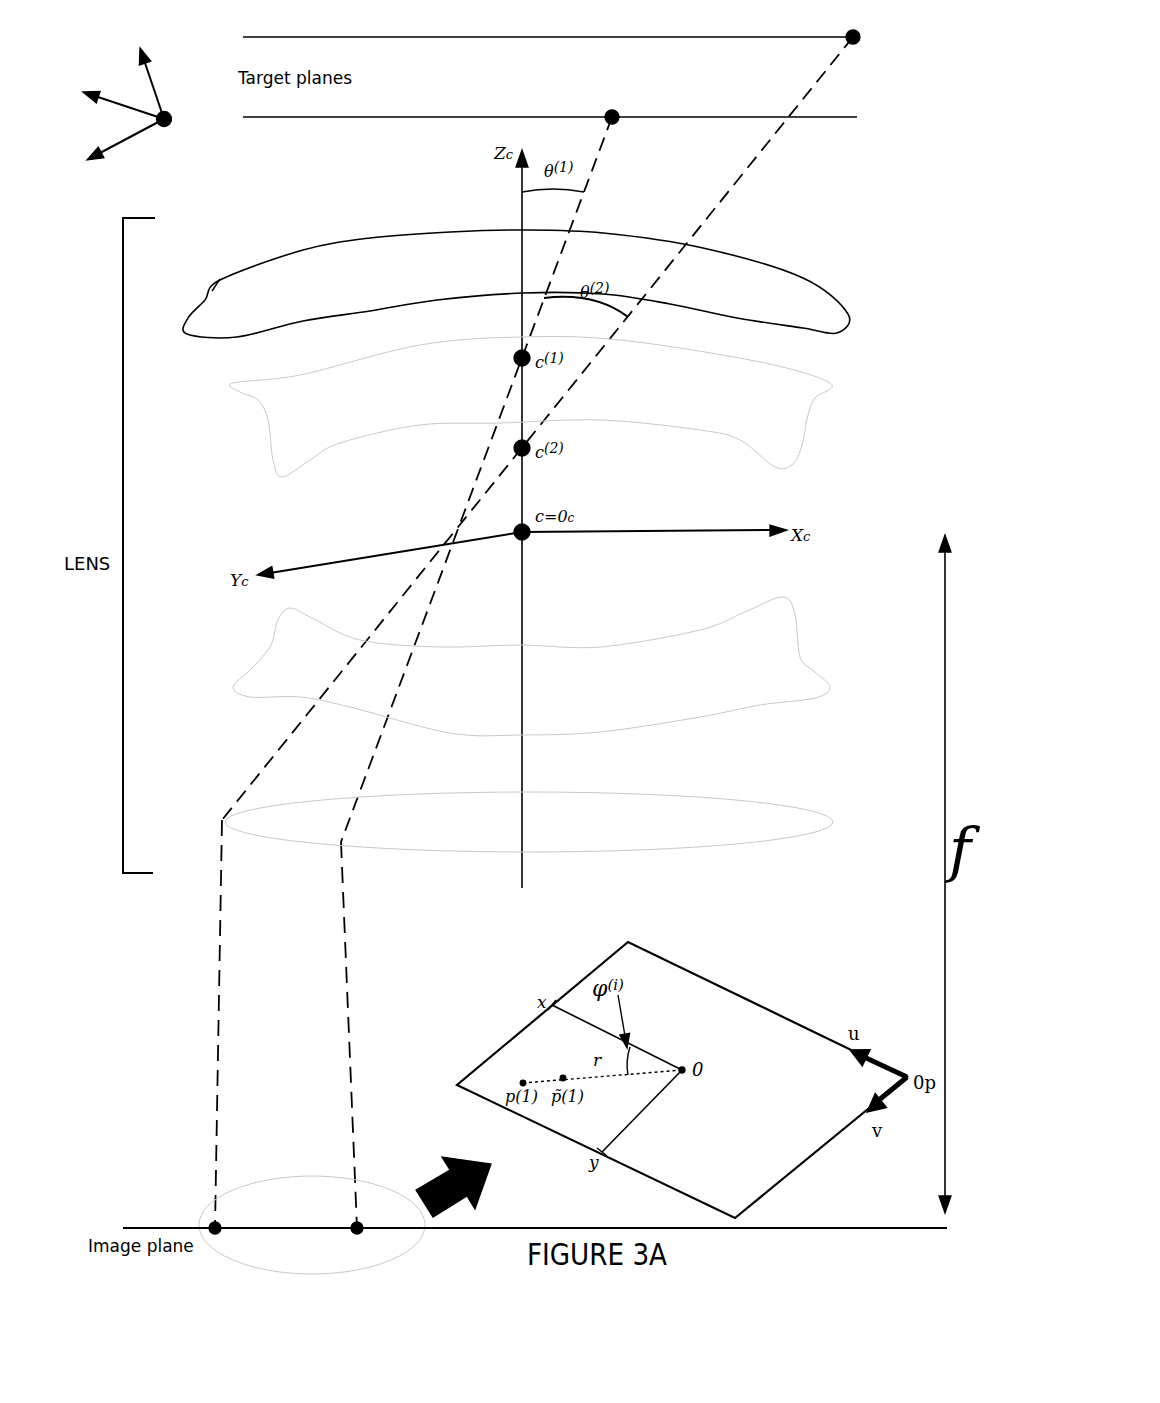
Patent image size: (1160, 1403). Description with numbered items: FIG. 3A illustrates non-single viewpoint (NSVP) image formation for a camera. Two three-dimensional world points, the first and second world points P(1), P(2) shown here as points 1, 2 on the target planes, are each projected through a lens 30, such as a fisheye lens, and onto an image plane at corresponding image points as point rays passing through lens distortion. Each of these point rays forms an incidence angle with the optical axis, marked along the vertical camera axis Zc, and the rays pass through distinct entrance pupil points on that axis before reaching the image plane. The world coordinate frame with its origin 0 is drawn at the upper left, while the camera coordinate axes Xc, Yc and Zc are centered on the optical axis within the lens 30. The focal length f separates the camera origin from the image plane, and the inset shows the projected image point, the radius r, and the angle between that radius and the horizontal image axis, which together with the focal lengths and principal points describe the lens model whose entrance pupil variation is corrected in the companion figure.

The lens 30 is at (529, 830).
The world coordinate origin 0 is at (128, 98).
The first target point and ray 1 is at (487, 660).
The second target point and ray 2 is at (550, 632).